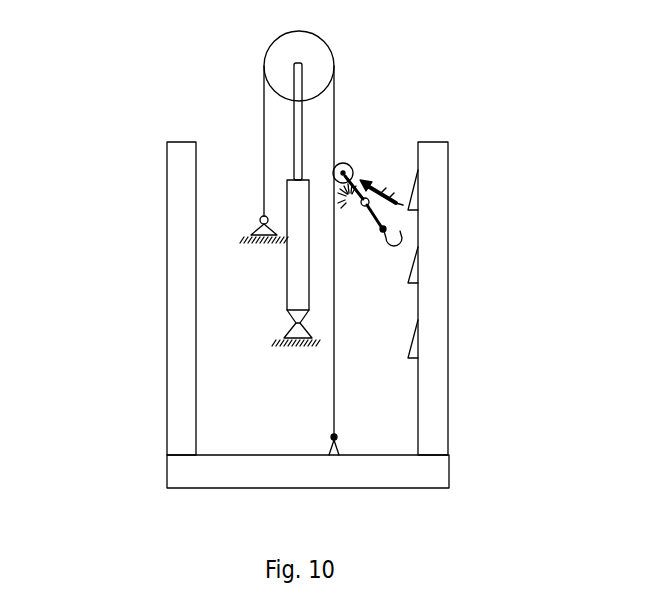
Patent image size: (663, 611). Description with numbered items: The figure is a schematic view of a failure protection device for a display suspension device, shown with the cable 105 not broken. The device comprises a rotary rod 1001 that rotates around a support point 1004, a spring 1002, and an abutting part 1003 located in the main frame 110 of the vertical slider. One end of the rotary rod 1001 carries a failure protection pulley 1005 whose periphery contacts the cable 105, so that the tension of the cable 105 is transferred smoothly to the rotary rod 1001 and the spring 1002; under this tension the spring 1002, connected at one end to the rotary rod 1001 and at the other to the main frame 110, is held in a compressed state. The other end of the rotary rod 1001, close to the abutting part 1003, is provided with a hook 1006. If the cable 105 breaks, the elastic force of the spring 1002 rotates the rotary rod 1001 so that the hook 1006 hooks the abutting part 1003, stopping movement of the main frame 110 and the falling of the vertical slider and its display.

The cable 105 is at (334, 133).
The failure protection pulley 1005 is at (334, 166).
The spring 1002 is at (345, 198).
The support point 1004 is at (361, 205).
The rotary rod 1001 is at (374, 217).
The abutting part 1003 is at (419, 210).
The hook 1006 is at (415, 255).
The main frame 110 is at (438, 390).